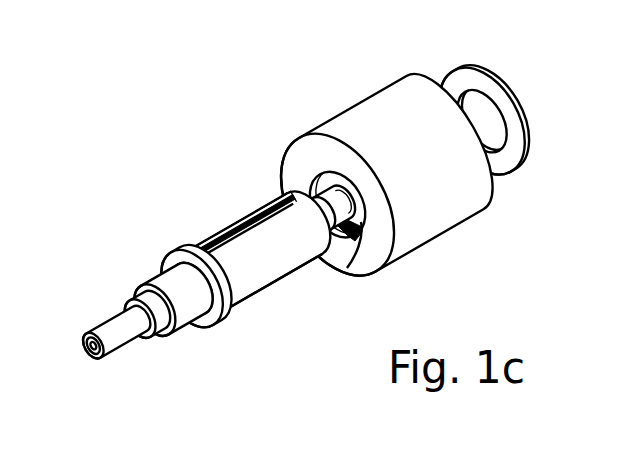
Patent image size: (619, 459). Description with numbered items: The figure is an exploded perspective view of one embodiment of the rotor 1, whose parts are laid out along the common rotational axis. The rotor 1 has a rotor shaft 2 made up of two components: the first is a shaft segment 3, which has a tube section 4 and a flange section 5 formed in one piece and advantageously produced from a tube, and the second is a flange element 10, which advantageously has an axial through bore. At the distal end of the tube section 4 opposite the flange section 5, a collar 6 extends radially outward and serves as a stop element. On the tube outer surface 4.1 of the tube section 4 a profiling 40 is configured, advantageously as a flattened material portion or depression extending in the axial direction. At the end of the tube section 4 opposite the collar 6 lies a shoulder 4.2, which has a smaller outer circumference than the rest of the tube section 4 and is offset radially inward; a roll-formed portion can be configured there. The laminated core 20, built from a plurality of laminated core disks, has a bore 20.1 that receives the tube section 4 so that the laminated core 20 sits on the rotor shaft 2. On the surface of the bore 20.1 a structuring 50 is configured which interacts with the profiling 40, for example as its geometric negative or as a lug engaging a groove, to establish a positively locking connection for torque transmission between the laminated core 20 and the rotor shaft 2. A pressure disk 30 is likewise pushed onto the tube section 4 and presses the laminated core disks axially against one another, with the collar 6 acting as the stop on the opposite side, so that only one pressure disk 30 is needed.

The rotor 1 is at (313, 211).
The rotor shaft 2 is at (220, 231).
The shaft segment 3 is at (258, 186).
The tube section 4 is at (256, 280).
The tube outer surface 4.1 is at (276, 265).
The shoulder 4.2 is at (297, 183).
The flange section 5 is at (331, 190).
The collar 6 is at (218, 330).
The flange element 10 is at (103, 325).
The laminated core 20 is at (352, 130).
The bore 20.1 is at (351, 250).
The pressure disk 30 is at (503, 160).
The profiling 40 is at (212, 232).
The structuring 50 is at (339, 238).